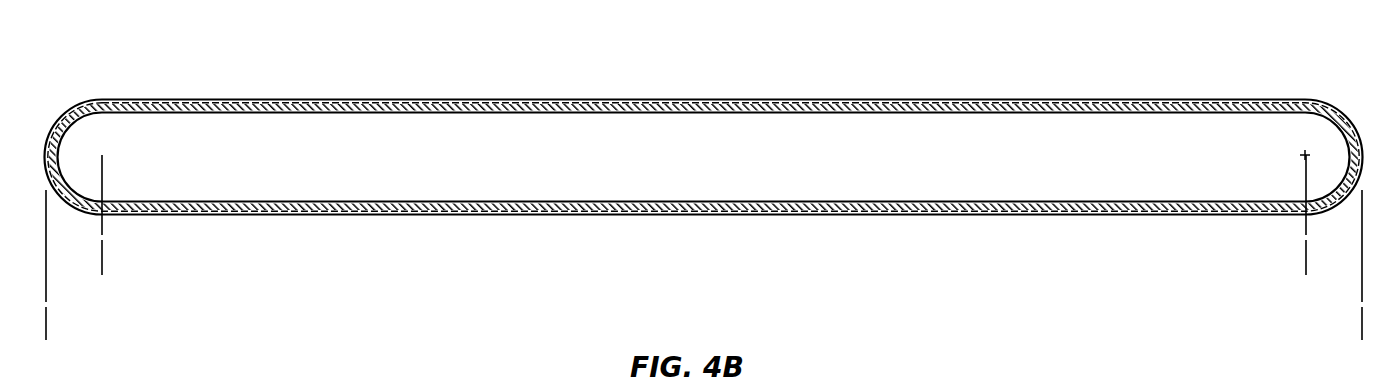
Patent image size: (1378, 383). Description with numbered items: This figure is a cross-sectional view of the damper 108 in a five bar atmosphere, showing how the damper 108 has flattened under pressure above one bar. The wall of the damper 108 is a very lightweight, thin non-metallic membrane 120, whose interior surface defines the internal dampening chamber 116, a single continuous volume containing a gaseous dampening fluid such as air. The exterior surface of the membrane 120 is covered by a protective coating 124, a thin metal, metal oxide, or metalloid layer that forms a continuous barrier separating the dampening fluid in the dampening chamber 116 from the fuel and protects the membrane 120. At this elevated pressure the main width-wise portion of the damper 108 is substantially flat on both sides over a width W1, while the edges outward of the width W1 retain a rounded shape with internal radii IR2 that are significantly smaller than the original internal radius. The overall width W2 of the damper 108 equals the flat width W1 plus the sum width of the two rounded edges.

The damper 108 is at (175, 74).
The internal dampening chamber 116 is at (917, 201).
The membrane 120 is at (787, 103).
The protective coating 124 is at (1049, 100).
The internal radius IR2 is at (1334, 124).
The width W1 is at (119, 258).
The overall width W2 is at (63, 325).